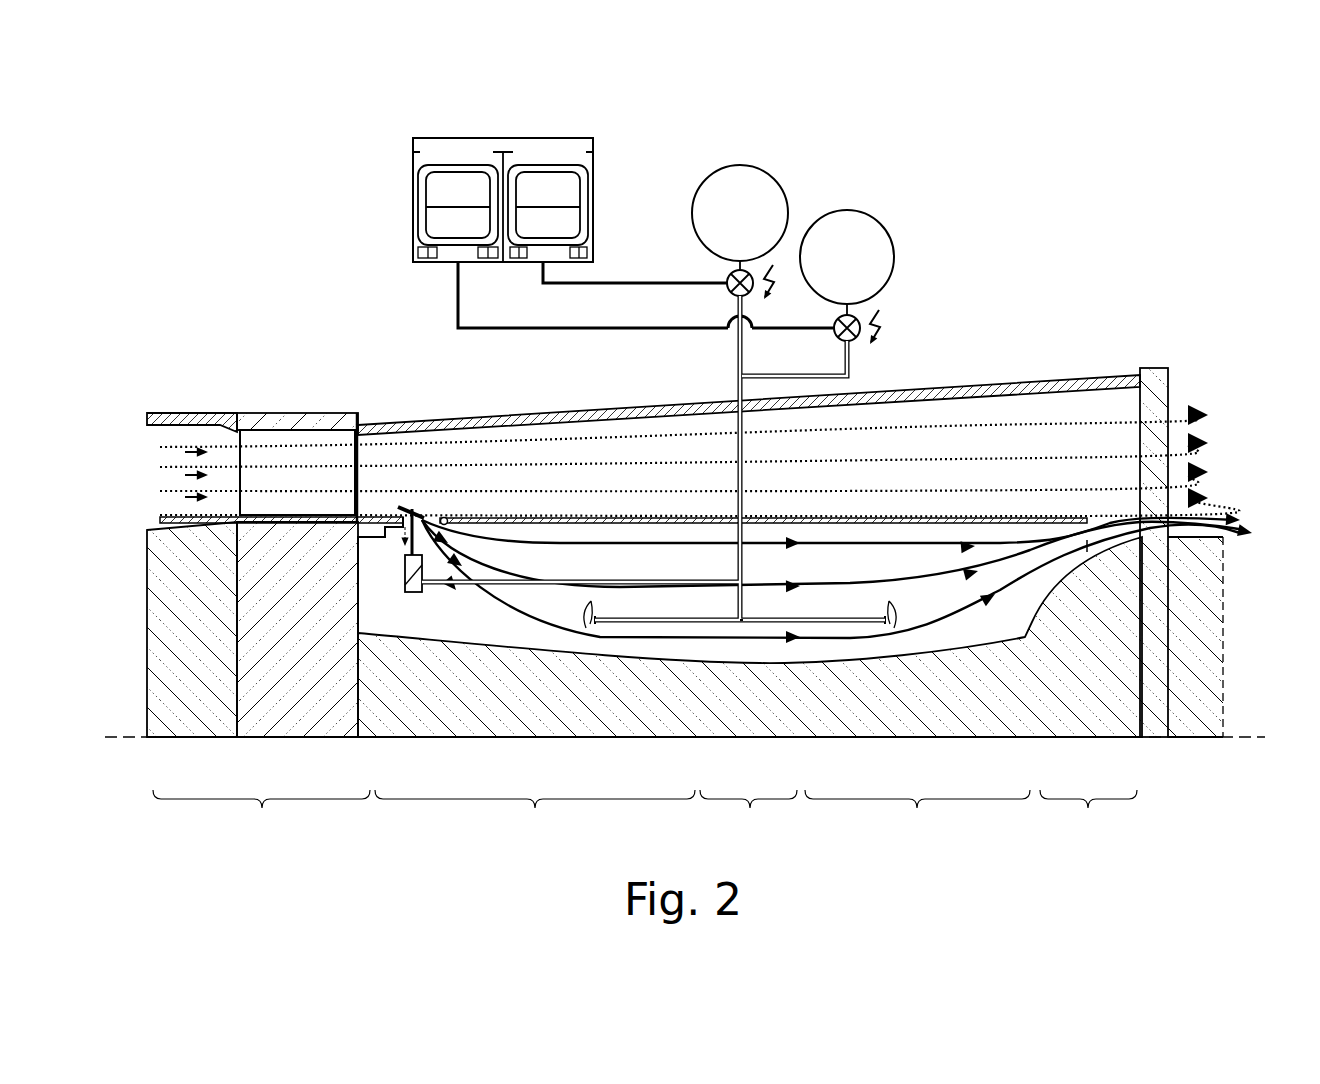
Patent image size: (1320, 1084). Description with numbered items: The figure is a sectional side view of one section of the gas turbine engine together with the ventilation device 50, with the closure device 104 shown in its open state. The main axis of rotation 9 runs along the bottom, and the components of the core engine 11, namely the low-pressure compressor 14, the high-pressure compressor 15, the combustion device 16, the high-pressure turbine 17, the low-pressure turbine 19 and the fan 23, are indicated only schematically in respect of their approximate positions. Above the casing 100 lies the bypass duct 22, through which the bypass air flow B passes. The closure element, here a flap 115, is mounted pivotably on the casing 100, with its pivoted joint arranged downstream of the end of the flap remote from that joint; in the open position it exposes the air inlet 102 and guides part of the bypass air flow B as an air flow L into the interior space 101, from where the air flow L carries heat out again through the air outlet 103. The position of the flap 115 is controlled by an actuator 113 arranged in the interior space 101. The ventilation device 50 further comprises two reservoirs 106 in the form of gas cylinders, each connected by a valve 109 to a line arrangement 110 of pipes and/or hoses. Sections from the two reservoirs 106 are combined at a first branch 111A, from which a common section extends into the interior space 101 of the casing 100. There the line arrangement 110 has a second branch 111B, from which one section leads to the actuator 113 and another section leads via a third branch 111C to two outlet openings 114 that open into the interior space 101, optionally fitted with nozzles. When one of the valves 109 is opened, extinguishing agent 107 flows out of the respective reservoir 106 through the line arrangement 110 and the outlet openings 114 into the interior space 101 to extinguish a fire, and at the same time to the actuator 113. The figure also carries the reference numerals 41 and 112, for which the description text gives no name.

The main axis of rotation 9 is at (1250, 737).
The core engine 11 is at (738, 717).
The low-pressure compressor 14 is at (275, 628).
The high-pressure compressor 15 is at (526, 682).
The combustion device 16 is at (748, 818).
The high-pressure turbine 17 is at (917, 820).
The low-pressure turbine 19 is at (1088, 818).
The bypass duct 22 is at (971, 455).
The fan 23 is at (275, 628).
The strut / outlet guide wall 41 is at (1068, 376).
The ventilation device 50 is at (822, 163).
The casing 100 is at (900, 516).
The interior space 101 is at (558, 570).
The air inlet 102 is at (395, 550).
The air outlet 103 is at (1105, 519).
The closure device 104 is at (458, 500).
The reservoir 106 is at (836, 188).
The extinguishing agent 107 is at (727, 175).
The valve 109 is at (727, 276).
The line arrangement 110 is at (653, 460).
The first branch 111A is at (736, 373).
The second branch 111B is at (736, 580).
The third branch 111C is at (736, 620).
The control unit 112 is at (418, 190).
The actuator 113 is at (417, 597).
The outlet opening 114 is at (587, 610).
The flap 115 is at (428, 508).
The bypass air flow B is at (691, 460).
The air flow L is at (470, 442).